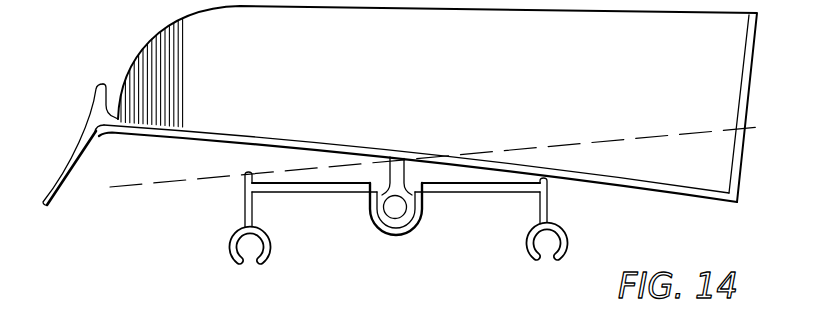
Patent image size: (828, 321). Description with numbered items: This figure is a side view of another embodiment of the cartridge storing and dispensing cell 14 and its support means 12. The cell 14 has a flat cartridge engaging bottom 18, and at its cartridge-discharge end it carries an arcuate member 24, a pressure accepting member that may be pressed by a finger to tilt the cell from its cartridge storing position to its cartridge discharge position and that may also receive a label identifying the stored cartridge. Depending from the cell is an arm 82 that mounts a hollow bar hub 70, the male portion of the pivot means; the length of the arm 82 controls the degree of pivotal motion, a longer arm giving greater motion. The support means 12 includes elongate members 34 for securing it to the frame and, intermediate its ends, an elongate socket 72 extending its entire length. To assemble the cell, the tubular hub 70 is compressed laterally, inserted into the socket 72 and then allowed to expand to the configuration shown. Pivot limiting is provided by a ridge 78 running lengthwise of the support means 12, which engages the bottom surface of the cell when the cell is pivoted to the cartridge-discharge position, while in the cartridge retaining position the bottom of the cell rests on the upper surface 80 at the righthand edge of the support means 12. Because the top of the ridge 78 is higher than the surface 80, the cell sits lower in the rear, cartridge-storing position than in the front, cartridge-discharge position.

The cartridge storing and dispensing cell 14 is at (556, 83).
The flat cartridge engaging bottom 18 is at (334, 140).
The arcuate member 24 is at (74, 158).
The arm 82 is at (390, 159).
The upper surface 80 is at (516, 183).
The ridge 78 is at (246, 174).
The elongate member 34 is at (229, 242).
The hollow bar hub 70 is at (381, 208).
The elongate socket 72 is at (390, 213).
The support means 12 is at (486, 198).